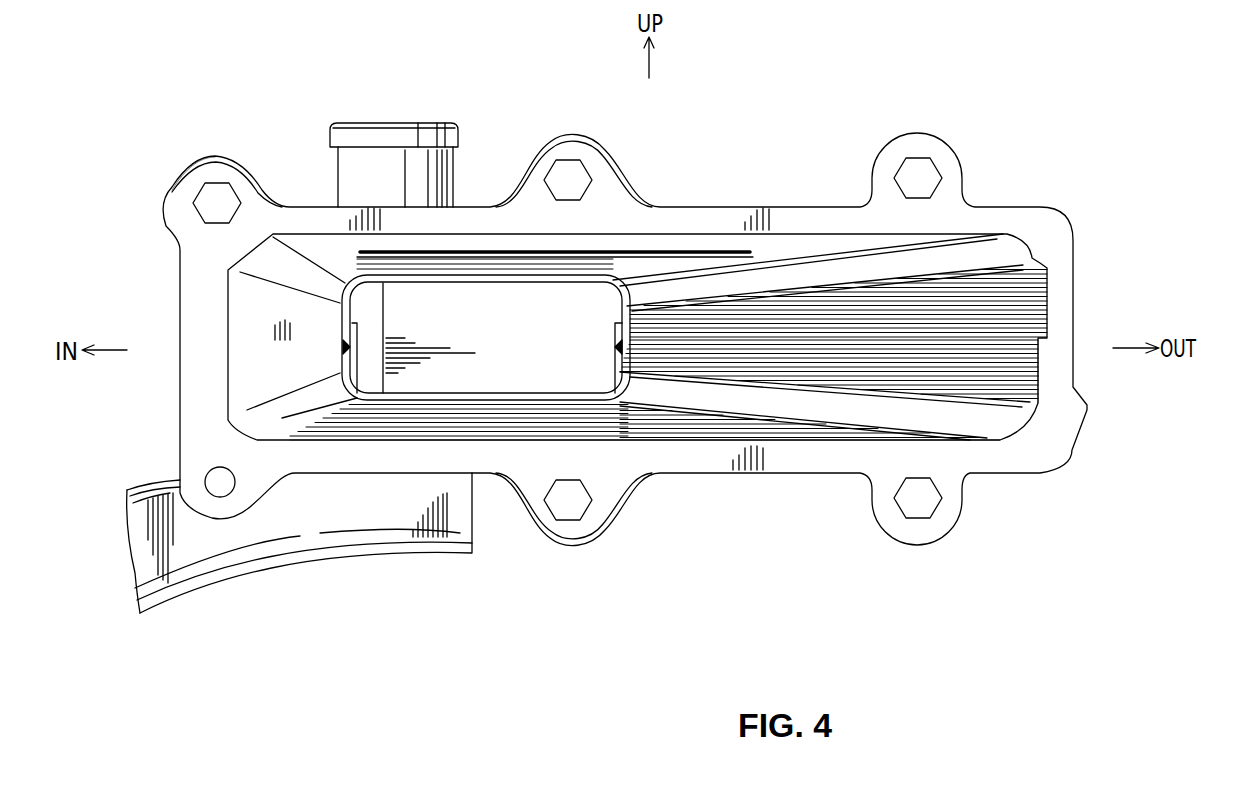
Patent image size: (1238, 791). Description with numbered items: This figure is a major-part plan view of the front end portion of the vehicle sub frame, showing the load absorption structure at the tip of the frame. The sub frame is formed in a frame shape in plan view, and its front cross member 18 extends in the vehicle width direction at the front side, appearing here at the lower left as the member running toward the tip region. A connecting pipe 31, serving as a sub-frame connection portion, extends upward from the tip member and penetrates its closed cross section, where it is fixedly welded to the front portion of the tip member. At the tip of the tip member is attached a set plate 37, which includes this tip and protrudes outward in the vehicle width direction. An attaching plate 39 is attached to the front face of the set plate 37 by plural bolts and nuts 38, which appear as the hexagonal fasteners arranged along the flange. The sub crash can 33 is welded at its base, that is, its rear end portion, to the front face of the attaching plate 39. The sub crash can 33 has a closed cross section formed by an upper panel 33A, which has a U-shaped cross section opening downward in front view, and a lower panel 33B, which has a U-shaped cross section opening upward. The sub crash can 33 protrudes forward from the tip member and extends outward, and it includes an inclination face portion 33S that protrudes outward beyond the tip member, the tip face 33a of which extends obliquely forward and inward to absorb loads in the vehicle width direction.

The front cross member 18 is at (262, 535).
The connecting pipe 31 is at (337, 170).
The sub crash can 33 is at (1062, 294).
The upper panel 33A is at (603, 280).
The tip face 33a is at (613, 332).
The inclination face portion 33S is at (825, 370).
The lower panel 33B is at (493, 400).
The set plate 37 is at (243, 161).
The bolts and nuts 38 is at (198, 215).
The attaching plate 39 is at (790, 222).